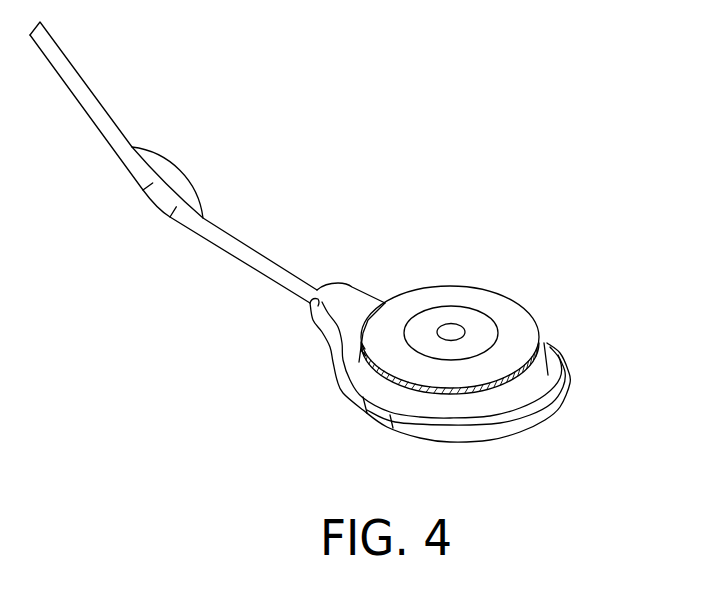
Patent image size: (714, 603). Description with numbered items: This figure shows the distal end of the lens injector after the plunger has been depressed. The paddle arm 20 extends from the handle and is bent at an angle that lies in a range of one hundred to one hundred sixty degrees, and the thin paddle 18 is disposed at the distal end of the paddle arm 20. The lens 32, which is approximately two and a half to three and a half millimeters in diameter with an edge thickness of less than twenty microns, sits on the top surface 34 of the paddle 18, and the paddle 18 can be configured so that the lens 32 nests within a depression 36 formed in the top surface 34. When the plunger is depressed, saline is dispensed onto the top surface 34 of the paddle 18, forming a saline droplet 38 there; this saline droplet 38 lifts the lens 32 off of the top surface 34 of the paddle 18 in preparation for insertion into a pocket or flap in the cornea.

The paddle 18 is at (417, 428).
The paddle arm 20 is at (192, 233).
The lens 32 is at (503, 313).
The top surface 34 is at (348, 308).
The depression 36 is at (468, 422).
The saline droplet 38 is at (520, 382).